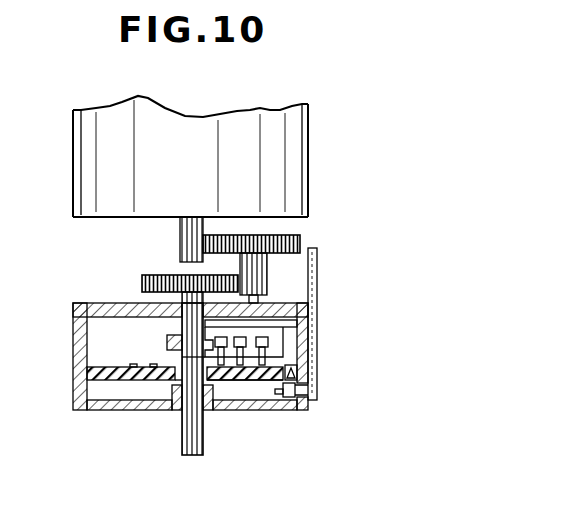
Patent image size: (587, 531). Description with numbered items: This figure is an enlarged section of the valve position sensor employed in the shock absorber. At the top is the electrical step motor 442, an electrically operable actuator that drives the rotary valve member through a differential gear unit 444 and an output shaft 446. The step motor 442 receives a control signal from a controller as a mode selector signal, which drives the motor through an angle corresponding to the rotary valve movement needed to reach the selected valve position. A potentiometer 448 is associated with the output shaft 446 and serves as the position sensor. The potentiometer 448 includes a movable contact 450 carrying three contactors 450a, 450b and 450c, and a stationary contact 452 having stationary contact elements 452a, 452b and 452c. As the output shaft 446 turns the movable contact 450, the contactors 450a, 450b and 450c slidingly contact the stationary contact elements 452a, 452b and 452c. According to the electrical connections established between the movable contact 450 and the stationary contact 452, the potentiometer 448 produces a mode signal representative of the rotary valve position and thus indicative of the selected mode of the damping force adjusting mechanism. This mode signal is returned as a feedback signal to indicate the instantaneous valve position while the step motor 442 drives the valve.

The electrical step motor 442 is at (308, 147).
The differential gear unit 444 is at (303, 230).
The output shaft 446 is at (172, 300).
The potentiometer 448 is at (285, 326).
The movable contact 450 is at (258, 326).
The contactor 450a is at (232, 383).
The contactor 450b is at (262, 383).
The contactor 450c is at (250, 341).
The stationary contact 452 is at (203, 383).
The stationary contact element 452a is at (217, 383).
The stationary contact element 452b is at (248, 328).
The stationary contact element 452c is at (291, 365).